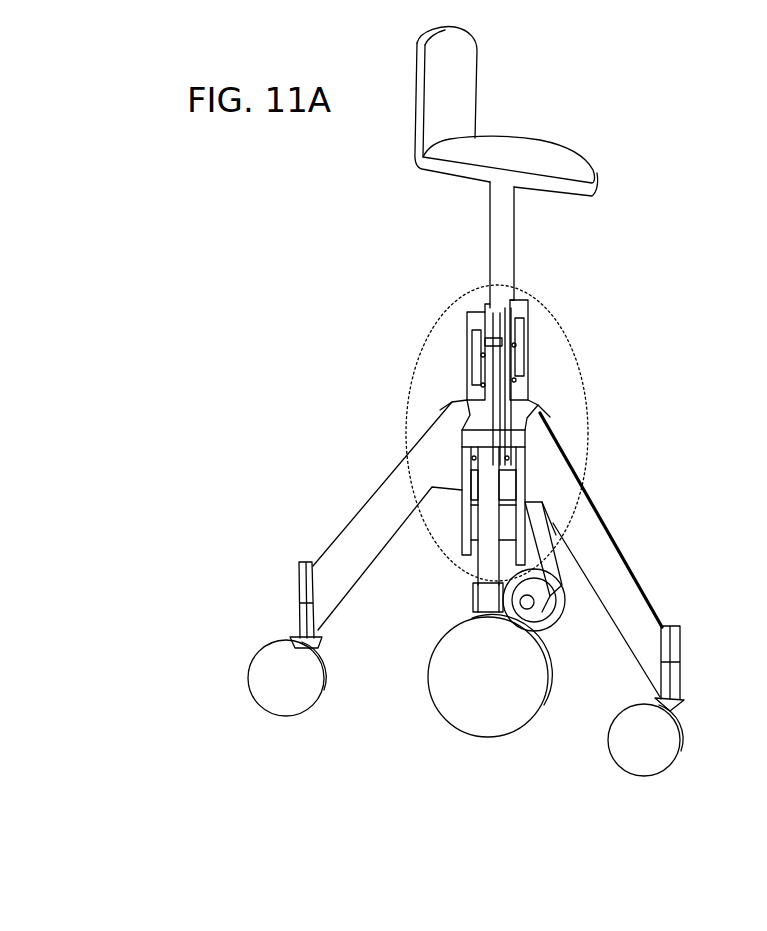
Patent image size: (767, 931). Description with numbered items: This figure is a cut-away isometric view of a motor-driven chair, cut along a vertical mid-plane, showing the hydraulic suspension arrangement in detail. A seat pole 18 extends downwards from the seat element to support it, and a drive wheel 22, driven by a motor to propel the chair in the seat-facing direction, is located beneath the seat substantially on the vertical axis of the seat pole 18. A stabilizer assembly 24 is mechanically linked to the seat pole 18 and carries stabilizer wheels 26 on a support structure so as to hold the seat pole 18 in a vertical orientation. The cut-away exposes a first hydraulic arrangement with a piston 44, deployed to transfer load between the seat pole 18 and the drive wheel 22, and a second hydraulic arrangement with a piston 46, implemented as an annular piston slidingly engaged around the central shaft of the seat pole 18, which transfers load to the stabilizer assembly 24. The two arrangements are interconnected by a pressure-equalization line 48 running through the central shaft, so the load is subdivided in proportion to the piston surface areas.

The seat pole 18 is at (489, 250).
The drive wheel 22 is at (512, 717).
The stabilizer assembly 24 is at (393, 490).
The stabilizer wheel 26 is at (258, 658).
The piston 44 is at (532, 490).
The piston 46 is at (520, 360).
The pressure-equalization line 48 is at (525, 438).